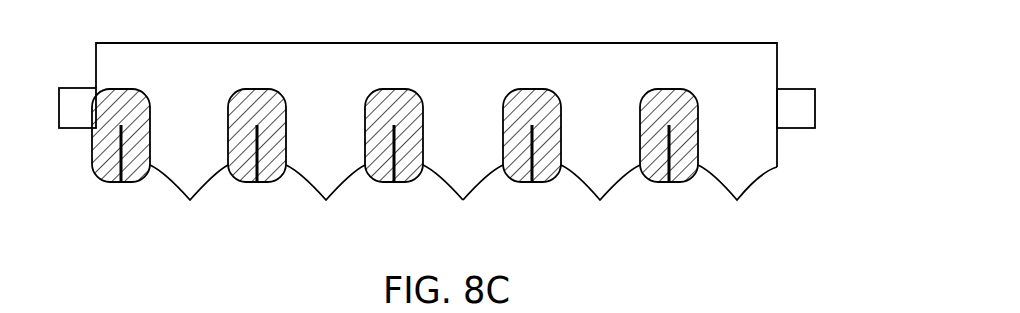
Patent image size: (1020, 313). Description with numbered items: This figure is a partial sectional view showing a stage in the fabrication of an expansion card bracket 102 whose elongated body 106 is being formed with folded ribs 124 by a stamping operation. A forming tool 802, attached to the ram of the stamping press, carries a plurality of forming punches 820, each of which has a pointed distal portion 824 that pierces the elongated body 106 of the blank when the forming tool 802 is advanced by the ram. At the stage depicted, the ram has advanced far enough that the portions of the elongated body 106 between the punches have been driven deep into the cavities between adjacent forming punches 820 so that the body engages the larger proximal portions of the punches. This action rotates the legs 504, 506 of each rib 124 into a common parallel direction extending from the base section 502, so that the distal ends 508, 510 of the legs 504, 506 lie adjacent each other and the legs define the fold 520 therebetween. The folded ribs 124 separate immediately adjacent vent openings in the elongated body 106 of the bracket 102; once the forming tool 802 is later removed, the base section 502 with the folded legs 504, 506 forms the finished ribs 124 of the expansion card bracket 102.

The forming tool 802 is at (96, 77).
The base section 502 is at (111, 119).
The fold 520 is at (118, 140).
The expansion card bracket 102 is at (58, 100).
The elongated body 106 is at (808, 130).
The rib 124 is at (75, 157).
The leg 504 is at (98, 155).
The leg 506 is at (137, 162).
The distal end 508 is at (240, 183).
The distal end 510 is at (277, 182).
The distal portion 824 is at (475, 192).
The forming punch 820 is at (463, 218).